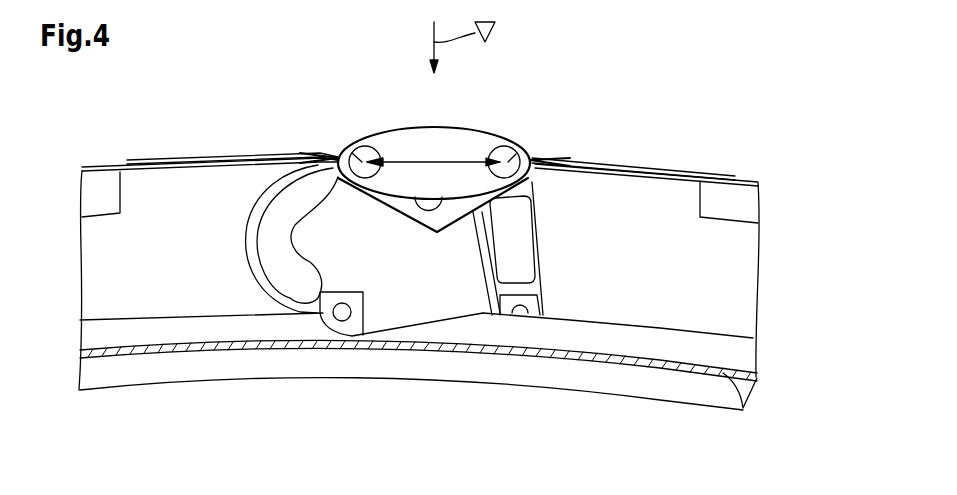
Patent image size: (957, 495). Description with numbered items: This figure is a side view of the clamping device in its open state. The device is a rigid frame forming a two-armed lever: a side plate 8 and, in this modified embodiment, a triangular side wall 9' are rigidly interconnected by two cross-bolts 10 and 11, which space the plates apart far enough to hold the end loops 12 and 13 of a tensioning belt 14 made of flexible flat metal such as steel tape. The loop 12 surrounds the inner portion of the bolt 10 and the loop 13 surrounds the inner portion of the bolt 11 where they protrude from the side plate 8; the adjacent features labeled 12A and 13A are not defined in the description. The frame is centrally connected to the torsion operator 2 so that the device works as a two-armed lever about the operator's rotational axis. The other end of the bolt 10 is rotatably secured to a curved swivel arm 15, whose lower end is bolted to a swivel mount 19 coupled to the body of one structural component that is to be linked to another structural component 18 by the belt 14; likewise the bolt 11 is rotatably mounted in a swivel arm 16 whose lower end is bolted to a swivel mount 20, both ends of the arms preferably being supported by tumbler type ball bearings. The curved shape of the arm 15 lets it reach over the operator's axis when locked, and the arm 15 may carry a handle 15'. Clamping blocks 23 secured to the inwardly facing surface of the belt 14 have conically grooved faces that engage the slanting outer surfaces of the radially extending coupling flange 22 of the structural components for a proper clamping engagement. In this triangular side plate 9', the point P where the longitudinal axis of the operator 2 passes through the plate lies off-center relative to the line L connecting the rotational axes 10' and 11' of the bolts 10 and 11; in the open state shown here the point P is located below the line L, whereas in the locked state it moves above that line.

The torsion operator 2 is at (428, 198).
The side plate 8 is at (417, 140).
The modified side wall 9' is at (481, 133).
The cross-bolt 10 is at (363, 106).
The rotational axis of connecting bolt 10' is at (343, 119).
The cross-bolt 11 is at (540, 183).
The rotational axis of connecting bolt 11' is at (520, 120).
The end loop 12 is at (322, 148).
The left spring strip 12A is at (196, 158).
The end loop 13 is at (546, 156).
The right spring strip 13A is at (636, 168).
The tensioning belt 14 is at (108, 163).
The curved swivel arm 15 is at (266, 239).
The handle 15' is at (212, 264).
The swivel arm 16 is at (543, 258).
The structural component 18 is at (742, 407).
The swivel mount 19 is at (368, 309).
The swivel mount 20 is at (540, 306).
The coupling flange 22 is at (752, 348).
The clamping block 23 is at (90, 183).
The line connecting rotational axes L is at (423, 163).
The point of passage of operator axis P is at (430, 188).